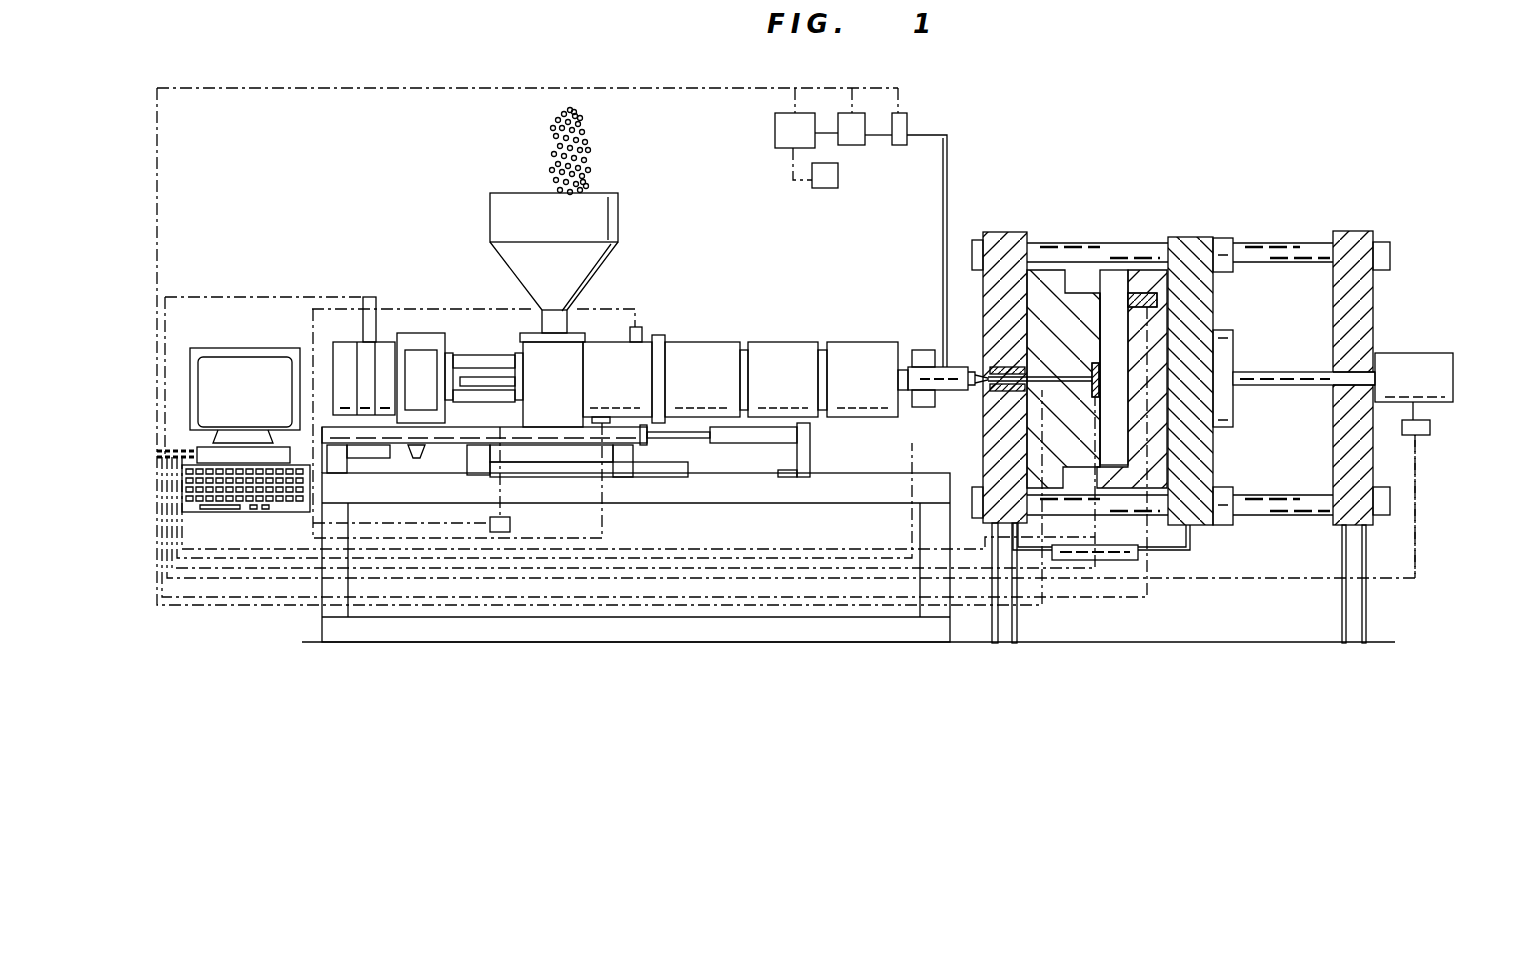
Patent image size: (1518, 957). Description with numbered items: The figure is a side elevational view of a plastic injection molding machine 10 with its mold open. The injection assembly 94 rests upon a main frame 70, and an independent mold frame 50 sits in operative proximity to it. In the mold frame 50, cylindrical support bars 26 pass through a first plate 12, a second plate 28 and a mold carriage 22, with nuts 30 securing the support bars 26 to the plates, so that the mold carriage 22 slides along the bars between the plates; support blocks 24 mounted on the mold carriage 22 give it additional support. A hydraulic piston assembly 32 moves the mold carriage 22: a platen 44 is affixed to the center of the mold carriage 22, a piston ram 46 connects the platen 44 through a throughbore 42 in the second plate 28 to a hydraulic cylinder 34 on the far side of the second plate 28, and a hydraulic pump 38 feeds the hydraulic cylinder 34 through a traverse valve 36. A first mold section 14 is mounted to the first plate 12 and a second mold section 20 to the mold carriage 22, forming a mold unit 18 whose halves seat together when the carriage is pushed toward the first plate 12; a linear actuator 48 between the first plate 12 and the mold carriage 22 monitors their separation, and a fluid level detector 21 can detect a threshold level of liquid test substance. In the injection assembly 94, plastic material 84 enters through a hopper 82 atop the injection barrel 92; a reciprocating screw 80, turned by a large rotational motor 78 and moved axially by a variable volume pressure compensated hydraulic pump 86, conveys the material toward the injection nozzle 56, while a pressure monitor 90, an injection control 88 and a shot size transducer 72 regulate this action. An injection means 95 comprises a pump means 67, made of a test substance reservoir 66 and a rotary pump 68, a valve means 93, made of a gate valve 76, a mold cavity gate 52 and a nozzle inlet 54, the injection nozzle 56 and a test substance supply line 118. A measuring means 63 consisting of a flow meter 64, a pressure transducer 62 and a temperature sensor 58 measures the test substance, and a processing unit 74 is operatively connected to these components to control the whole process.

The injection molding machine 10 is at (1078, 122).
The first plate 12 is at (1002, 236).
The first mold section 14 is at (1050, 272).
The mold unit 18 is at (1102, 232).
The second mold section 20 is at (1133, 277).
The fluid level detector 21 is at (1145, 293).
The mold carriage 22 is at (1187, 233).
The support blocks 24 is at (1222, 236).
The support bars 26 is at (1288, 244).
The second plate 28 is at (1353, 232).
The nuts 30 is at (974, 255).
The hydraulic piston assembly 32 is at (1400, 303).
The hydraulic cylinder 34 is at (1410, 354).
The traverse valve 36 is at (1430, 417).
The hydraulic pump 38 is at (1418, 436).
The throughbore 42 is at (1337, 395).
The platen 44 is at (1233, 426).
The piston ram 46 is at (1281, 370).
The linear actuator 48 is at (1105, 561).
The mold frame 50 is at (1126, 519).
The mold cavity gate 52 is at (992, 450).
The nozzle inlet 54 is at (978, 367).
The injection nozzle 56 is at (917, 408).
The temperature sensor 58 is at (1040, 378).
The pressure transducer 62 is at (900, 146).
The measuring means 63 is at (571, 64).
The flow meter 64 is at (852, 147).
The test substance reservoir 66 is at (838, 181).
The pump means 67 is at (733, 172).
The rotary pump 68 is at (777, 133).
The main frame 70 is at (740, 625).
The shot size transducer 72 is at (490, 517).
The processing unit 74 is at (193, 448).
The gate valve 76 is at (1045, 320).
The large rotational motor 78 is at (368, 327).
The reciprocating screw 80 is at (475, 352).
The hopper 82 is at (517, 213).
The plastic material 84 is at (583, 143).
The variable volume pressure compensated hydraulic pump 86 is at (610, 350).
The injection control 88 is at (615, 414).
The pressure monitor 90 is at (643, 327).
The injection barrel 92 is at (778, 353).
The valve means 93 is at (908, 330).
The injection assembly 94 is at (840, 300).
The injection means 95 is at (890, 287).
The test substance supply line 118 is at (944, 183).